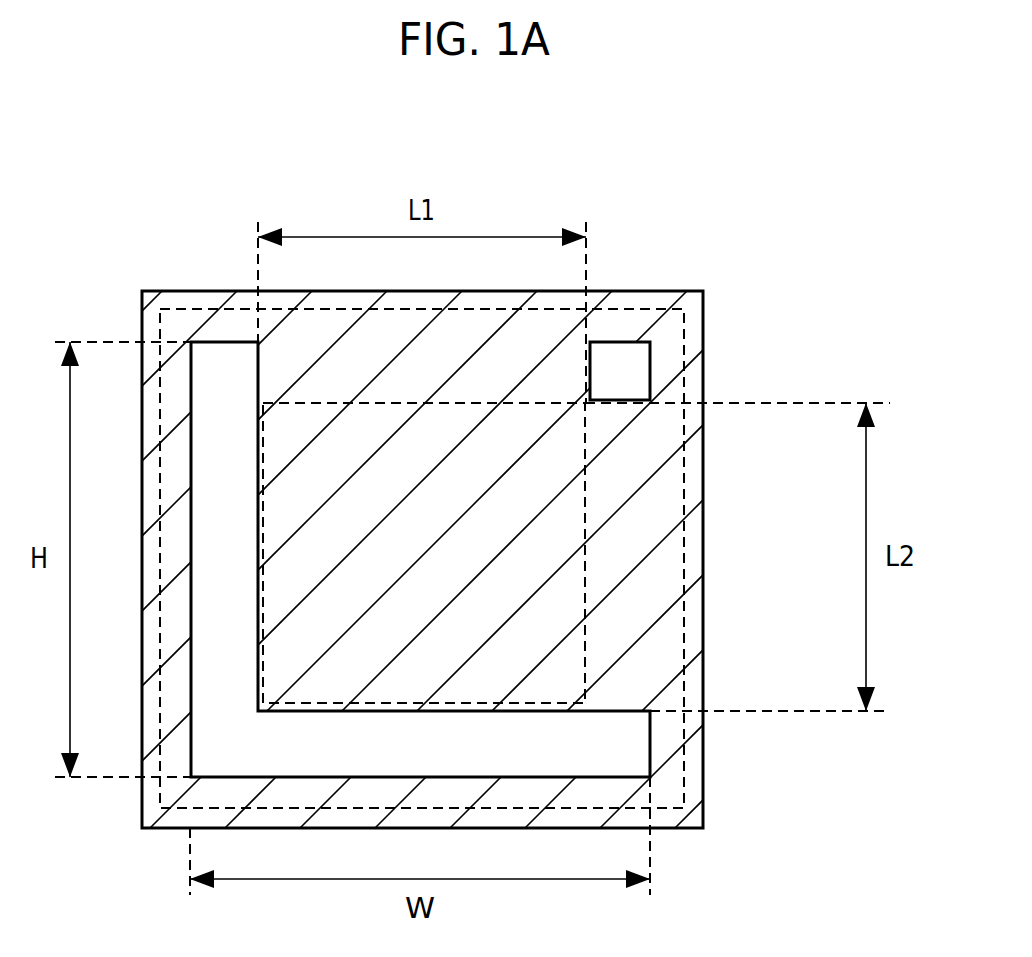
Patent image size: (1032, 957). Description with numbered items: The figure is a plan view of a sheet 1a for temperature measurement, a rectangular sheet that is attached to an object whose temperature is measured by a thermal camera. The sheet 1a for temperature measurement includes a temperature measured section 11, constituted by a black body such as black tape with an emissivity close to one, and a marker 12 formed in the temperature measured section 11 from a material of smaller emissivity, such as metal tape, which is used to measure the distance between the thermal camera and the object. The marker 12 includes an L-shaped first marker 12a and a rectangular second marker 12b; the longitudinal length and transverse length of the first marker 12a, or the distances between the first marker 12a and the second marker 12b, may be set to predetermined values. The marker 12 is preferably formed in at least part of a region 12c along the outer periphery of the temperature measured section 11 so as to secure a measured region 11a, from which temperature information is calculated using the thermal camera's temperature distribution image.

The sheet for temperature measurement 1a is at (516, 500).
The temperature measured section 11 is at (702, 622).
The measured region 11a is at (585, 478).
The marker 12 is at (534, 558).
The first marker 12a is at (617, 744).
The second marker 12b is at (627, 372).
The region along outer periphery of temperature measured section 12c is at (203, 308).